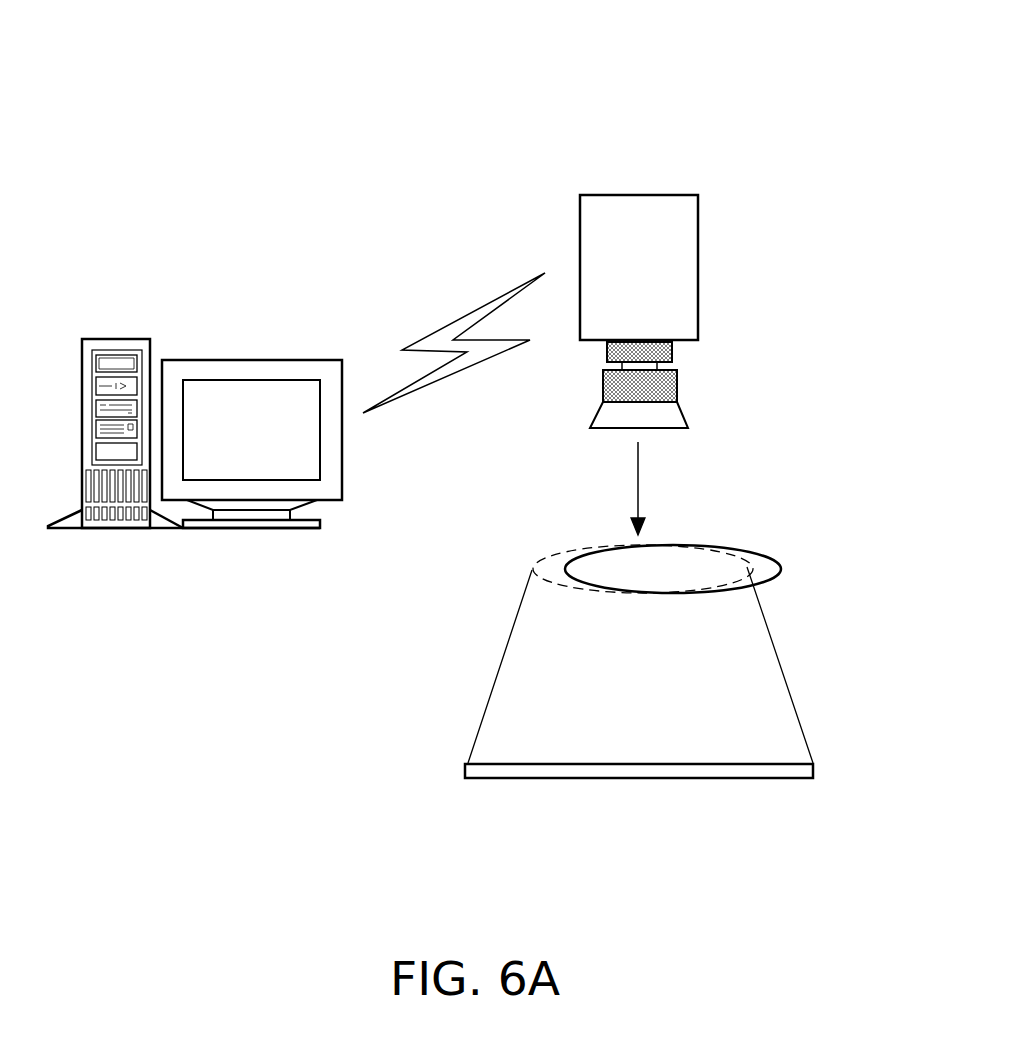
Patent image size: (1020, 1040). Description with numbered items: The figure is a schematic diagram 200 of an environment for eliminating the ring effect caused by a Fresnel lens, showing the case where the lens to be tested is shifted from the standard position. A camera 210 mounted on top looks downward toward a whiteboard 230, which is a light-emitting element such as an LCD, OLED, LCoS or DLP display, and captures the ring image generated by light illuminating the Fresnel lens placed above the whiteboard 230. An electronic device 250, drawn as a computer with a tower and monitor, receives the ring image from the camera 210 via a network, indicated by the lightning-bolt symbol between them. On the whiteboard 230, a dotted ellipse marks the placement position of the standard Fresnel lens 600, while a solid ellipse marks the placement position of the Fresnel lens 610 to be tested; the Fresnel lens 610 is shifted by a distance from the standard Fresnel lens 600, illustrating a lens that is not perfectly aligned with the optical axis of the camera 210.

The schematic diagram of an environment 200 is at (743, 102).
The camera 210 is at (698, 265).
The electronic device 250 is at (250, 360).
The whiteboard 230 is at (772, 780).
The standard Fresnel lens 600 is at (566, 554).
The Fresnel lens to be tested 610 is at (767, 558).